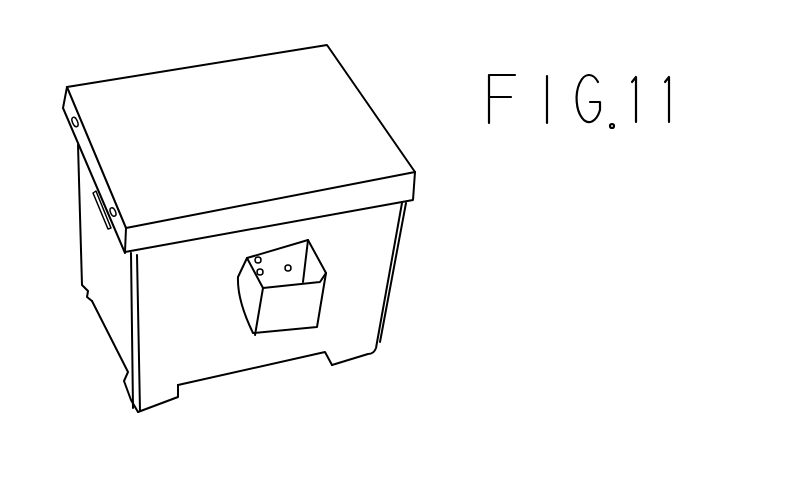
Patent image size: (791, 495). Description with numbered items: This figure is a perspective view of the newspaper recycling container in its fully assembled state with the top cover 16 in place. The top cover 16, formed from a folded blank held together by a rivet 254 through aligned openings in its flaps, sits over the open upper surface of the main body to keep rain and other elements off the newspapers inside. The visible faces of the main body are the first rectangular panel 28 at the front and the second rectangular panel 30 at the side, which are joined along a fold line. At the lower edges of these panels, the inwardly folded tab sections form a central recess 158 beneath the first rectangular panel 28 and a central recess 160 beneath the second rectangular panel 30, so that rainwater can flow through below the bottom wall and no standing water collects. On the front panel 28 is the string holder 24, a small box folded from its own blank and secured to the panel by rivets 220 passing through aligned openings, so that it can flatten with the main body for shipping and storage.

The top cover 16 is at (328, 88).
The rivet 254 is at (77, 113).
The second rectangular panel 30 is at (92, 242).
The central recess 160 is at (108, 325).
The first rectangular panel 28 is at (365, 302).
The central recess 158 is at (235, 373).
The string holder 24 is at (240, 318).
The rivets 220 is at (287, 265).